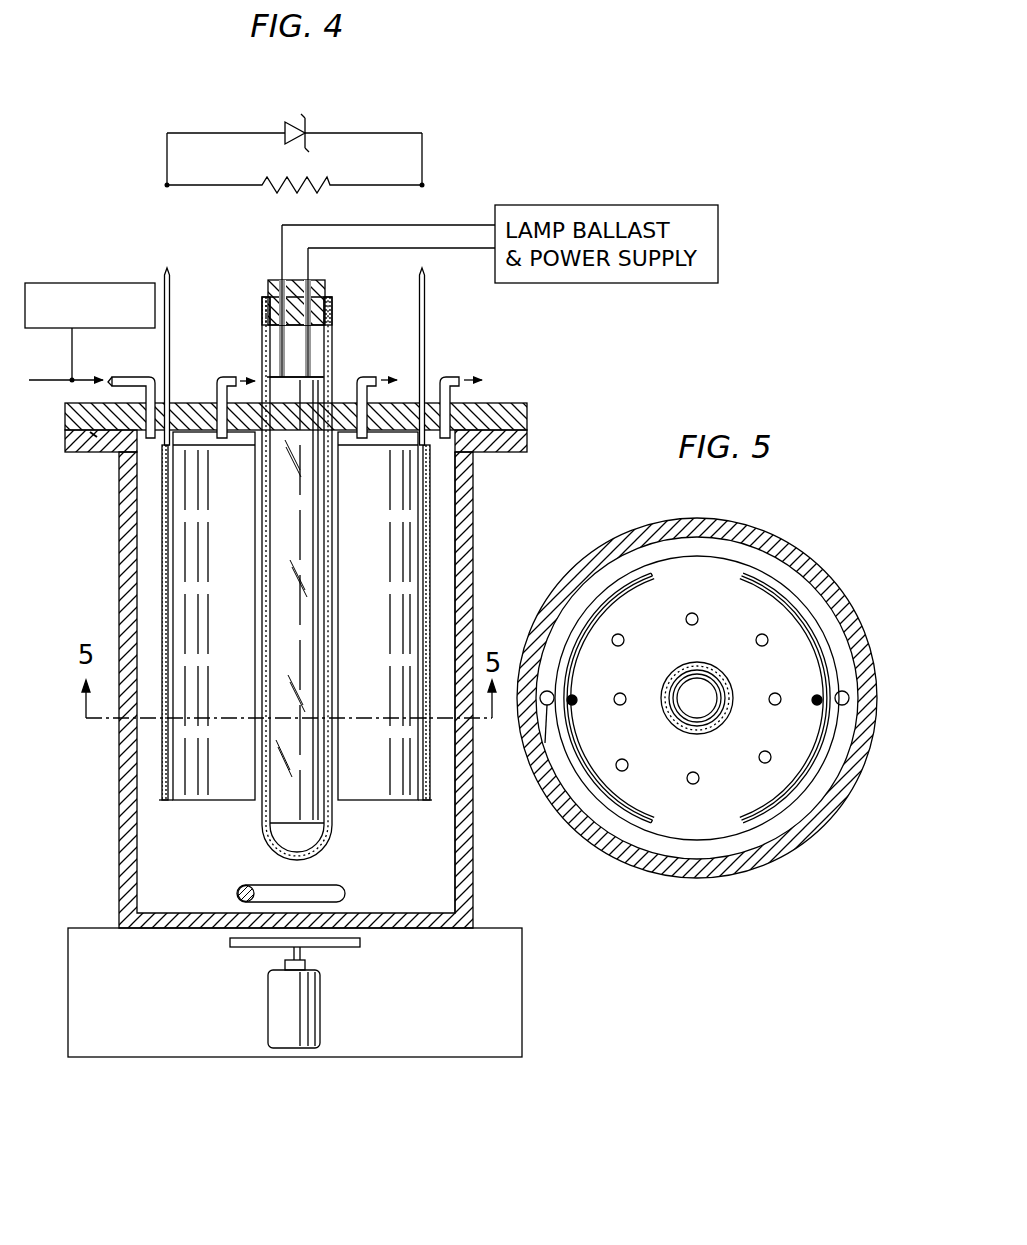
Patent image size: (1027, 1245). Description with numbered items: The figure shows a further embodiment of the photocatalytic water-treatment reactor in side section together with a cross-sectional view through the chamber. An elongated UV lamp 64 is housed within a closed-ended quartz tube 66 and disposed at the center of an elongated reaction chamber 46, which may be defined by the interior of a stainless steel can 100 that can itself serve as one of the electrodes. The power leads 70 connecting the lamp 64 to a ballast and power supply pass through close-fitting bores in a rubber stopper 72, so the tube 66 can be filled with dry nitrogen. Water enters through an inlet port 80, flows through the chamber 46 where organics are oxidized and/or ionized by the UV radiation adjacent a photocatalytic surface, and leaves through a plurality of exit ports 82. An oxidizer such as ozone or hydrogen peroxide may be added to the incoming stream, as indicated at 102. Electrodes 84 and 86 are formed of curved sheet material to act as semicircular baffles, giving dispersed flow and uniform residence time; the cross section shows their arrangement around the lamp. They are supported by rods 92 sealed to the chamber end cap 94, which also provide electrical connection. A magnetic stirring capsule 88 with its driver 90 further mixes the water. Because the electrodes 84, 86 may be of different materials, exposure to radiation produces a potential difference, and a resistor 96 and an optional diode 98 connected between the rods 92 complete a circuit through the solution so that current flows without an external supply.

In FIG. 4, the reaction chamber 46 is at (148, 853).
In FIG. 5, the reaction chamber 46 is at (732, 570).
In FIG. 4, the UV lamp 64 is at (312, 560).
In FIG. 5, the UV lamp 64 is at (710, 680).
In FIG. 4, the quartz tube 66 is at (262, 625).
In FIG. 5, the quartz tube 66 is at (678, 722).
In FIG. 4, the power leads 70 is at (290, 365).
In FIG. 4, the rubber stopper 72 is at (264, 285).
In FIG. 4, the inlet port 80 is at (134, 377).
In FIG. 5, the inlet port 80 is at (530, 760).
In FIG. 4, the exit ports 82 is at (226, 368).
In FIG. 5, the exit ports 82 is at (624, 636).
In FIG. 4, the electrode 84 is at (162, 575).
In FIG. 5, the electrode 84 is at (625, 582).
In FIG. 4, the electrode 86 is at (432, 524).
In FIG. 5, the electrode 86 is at (777, 590).
In FIG. 4, the magnetic stirring capsule 88 is at (237, 893).
In FIG. 4, the driver 90 is at (522, 985).
In FIG. 4, the rods 92 is at (172, 293).
In FIG. 5, the rods 92 is at (574, 700).
In FIG. 4, the chamber end cap 94 is at (530, 412).
In FIG. 4, the resistor 96 is at (266, 184).
In FIG. 4, the diode 98 is at (286, 131).
In FIG. 4, the stainless steel can 100 is at (475, 837).
In FIG. 4, the oxidizer addition 102 is at (63, 283).